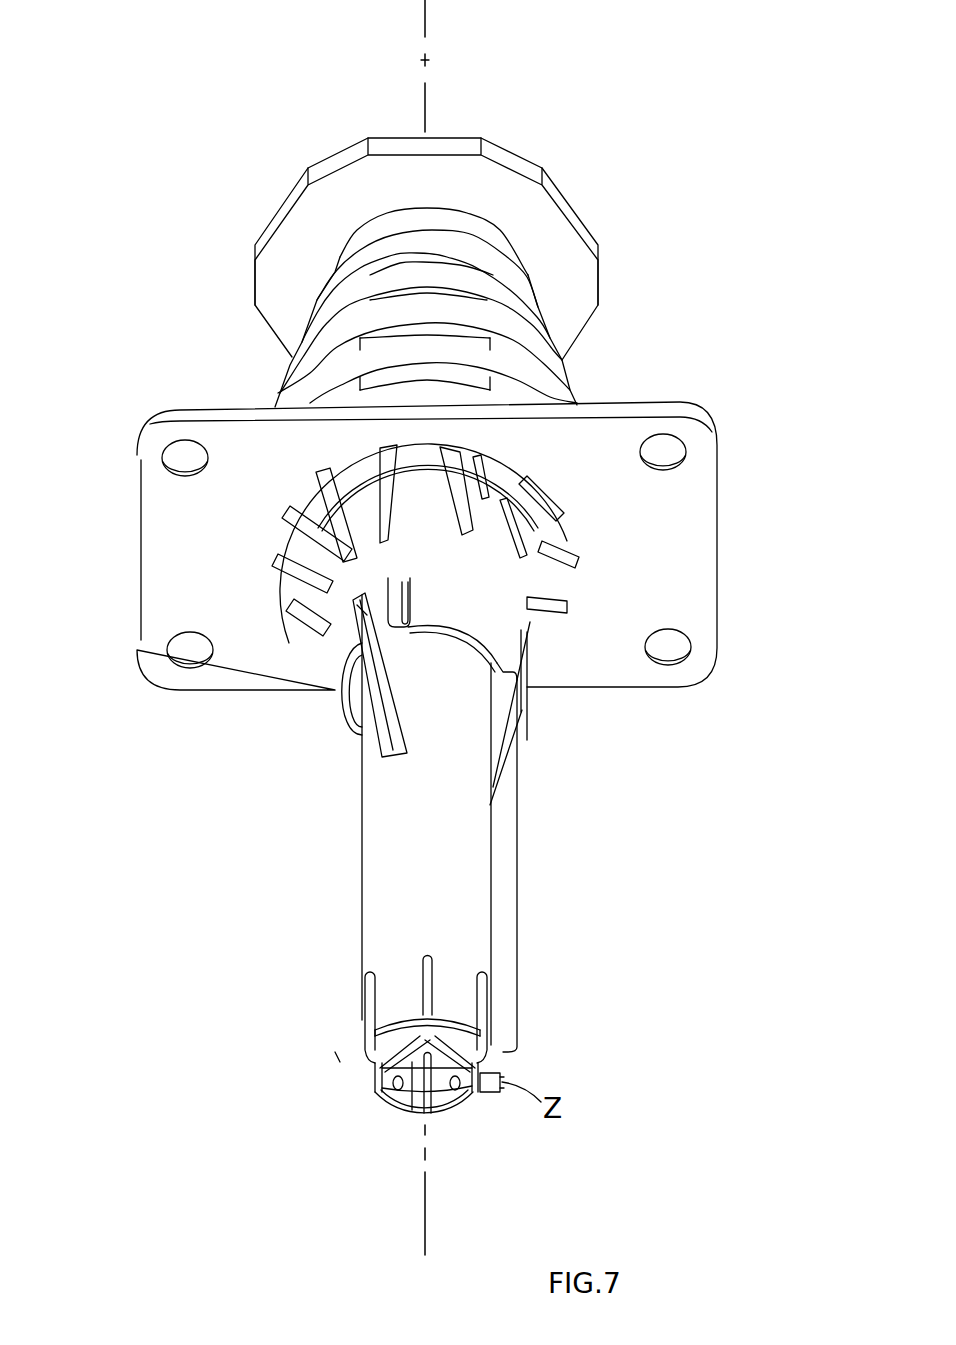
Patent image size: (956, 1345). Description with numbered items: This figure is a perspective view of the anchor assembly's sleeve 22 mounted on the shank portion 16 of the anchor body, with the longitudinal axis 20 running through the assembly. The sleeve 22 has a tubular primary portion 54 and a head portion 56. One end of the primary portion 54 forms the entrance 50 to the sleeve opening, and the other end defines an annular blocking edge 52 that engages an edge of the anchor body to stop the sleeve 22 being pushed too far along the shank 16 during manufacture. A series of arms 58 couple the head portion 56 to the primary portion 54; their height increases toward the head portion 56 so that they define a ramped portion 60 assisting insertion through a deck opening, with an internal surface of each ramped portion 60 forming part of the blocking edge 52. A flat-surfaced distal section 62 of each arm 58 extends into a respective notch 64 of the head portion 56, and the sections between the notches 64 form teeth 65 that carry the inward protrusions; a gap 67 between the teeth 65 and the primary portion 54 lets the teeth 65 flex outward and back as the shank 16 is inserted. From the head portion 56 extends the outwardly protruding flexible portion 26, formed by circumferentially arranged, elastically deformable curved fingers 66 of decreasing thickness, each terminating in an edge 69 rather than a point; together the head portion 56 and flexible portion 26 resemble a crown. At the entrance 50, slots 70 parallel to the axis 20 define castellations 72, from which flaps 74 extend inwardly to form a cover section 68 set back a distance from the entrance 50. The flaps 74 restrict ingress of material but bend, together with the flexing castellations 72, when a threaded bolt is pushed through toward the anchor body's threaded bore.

The shank portion 16 is at (403, 333).
The axis 20 is at (425, 61).
The sleeve 22 is at (415, 820).
The outwardly protruding flexible portion 26 is at (547, 518).
The entrance 50 is at (375, 1105).
The annular blocking edge 52 is at (336, 652).
The primary portion 54 is at (522, 855).
The head portion 56 is at (500, 635).
The arms 58 is at (365, 612).
The ramped portion 60 is at (399, 637).
The distal section 62 is at (493, 617).
The notch 64 is at (453, 460).
The teeth 65 is at (492, 618).
The curved fingers 66 is at (315, 537).
The gap 67 is at (452, 650).
The cover section 68 is at (330, 1057).
The edge 69 is at (401, 568).
The slots 70 is at (370, 975).
The castellations 72 is at (397, 1000).
The flaps 74 is at (443, 1062).